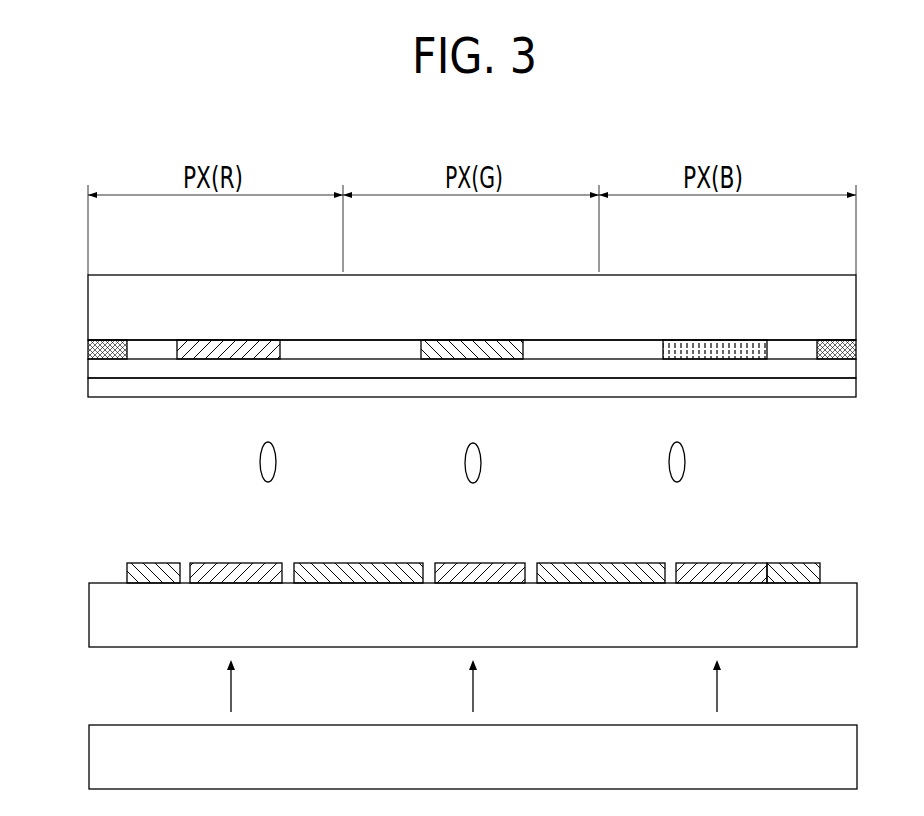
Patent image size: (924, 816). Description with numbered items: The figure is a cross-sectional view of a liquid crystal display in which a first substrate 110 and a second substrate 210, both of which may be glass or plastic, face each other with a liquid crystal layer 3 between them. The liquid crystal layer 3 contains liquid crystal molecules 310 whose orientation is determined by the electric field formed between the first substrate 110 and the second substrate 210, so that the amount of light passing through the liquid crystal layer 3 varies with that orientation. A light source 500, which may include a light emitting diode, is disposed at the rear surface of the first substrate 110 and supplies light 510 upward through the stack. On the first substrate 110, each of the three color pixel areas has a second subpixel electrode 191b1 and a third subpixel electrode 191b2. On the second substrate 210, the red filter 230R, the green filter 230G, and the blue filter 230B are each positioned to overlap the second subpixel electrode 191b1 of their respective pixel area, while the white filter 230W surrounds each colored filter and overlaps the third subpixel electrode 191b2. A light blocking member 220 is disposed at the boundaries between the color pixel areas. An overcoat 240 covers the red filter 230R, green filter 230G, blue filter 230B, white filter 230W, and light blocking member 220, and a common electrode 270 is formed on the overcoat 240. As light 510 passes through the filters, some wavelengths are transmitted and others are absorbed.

The liquid crystal layer 3 is at (858, 405).
The first substrate 110 is at (843, 613).
The second subpixel electrode 191b1 is at (232, 562).
The third subpixel electrode 191b2 is at (153, 562).
The second substrate 210 is at (837, 307).
The light blocking member 220 is at (88, 348).
The white filter 230W is at (150, 350).
The red filter 230R is at (223, 350).
The green filter 230G is at (470, 350).
The blue filter 230B is at (717, 350).
The overcoat 240 is at (837, 368).
The common electrode 270 is at (837, 389).
The liquid crystal molecule 310 is at (686, 462).
The light source 500 is at (843, 755).
The light 510 is at (719, 690).